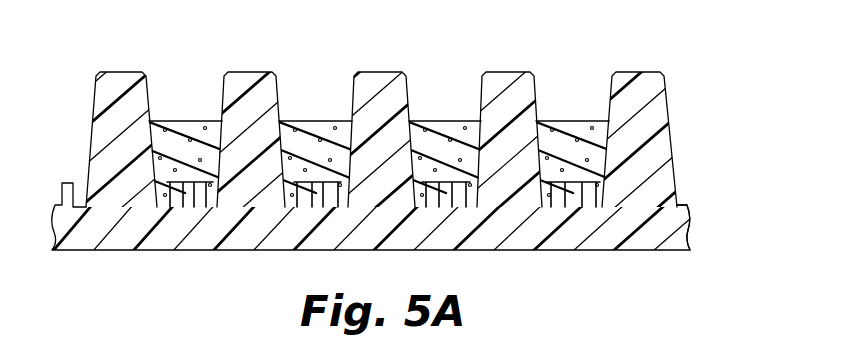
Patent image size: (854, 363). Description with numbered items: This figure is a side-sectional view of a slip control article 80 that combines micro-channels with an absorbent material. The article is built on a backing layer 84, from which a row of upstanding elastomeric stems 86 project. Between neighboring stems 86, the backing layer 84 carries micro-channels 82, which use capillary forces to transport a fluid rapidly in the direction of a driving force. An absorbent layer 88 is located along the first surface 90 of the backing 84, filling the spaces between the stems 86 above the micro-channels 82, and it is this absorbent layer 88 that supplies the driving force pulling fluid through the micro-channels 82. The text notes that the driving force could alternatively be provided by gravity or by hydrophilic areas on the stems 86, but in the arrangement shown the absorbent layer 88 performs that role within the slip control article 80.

The slip control article 80 is at (672, 42).
The micro-channels 82 is at (320, 182).
The backing layer 84 is at (130, 237).
The upstanding elastomeric stems 86 is at (122, 77).
The absorbent layer 88 is at (203, 122).
The first surface 90 is at (684, 206).